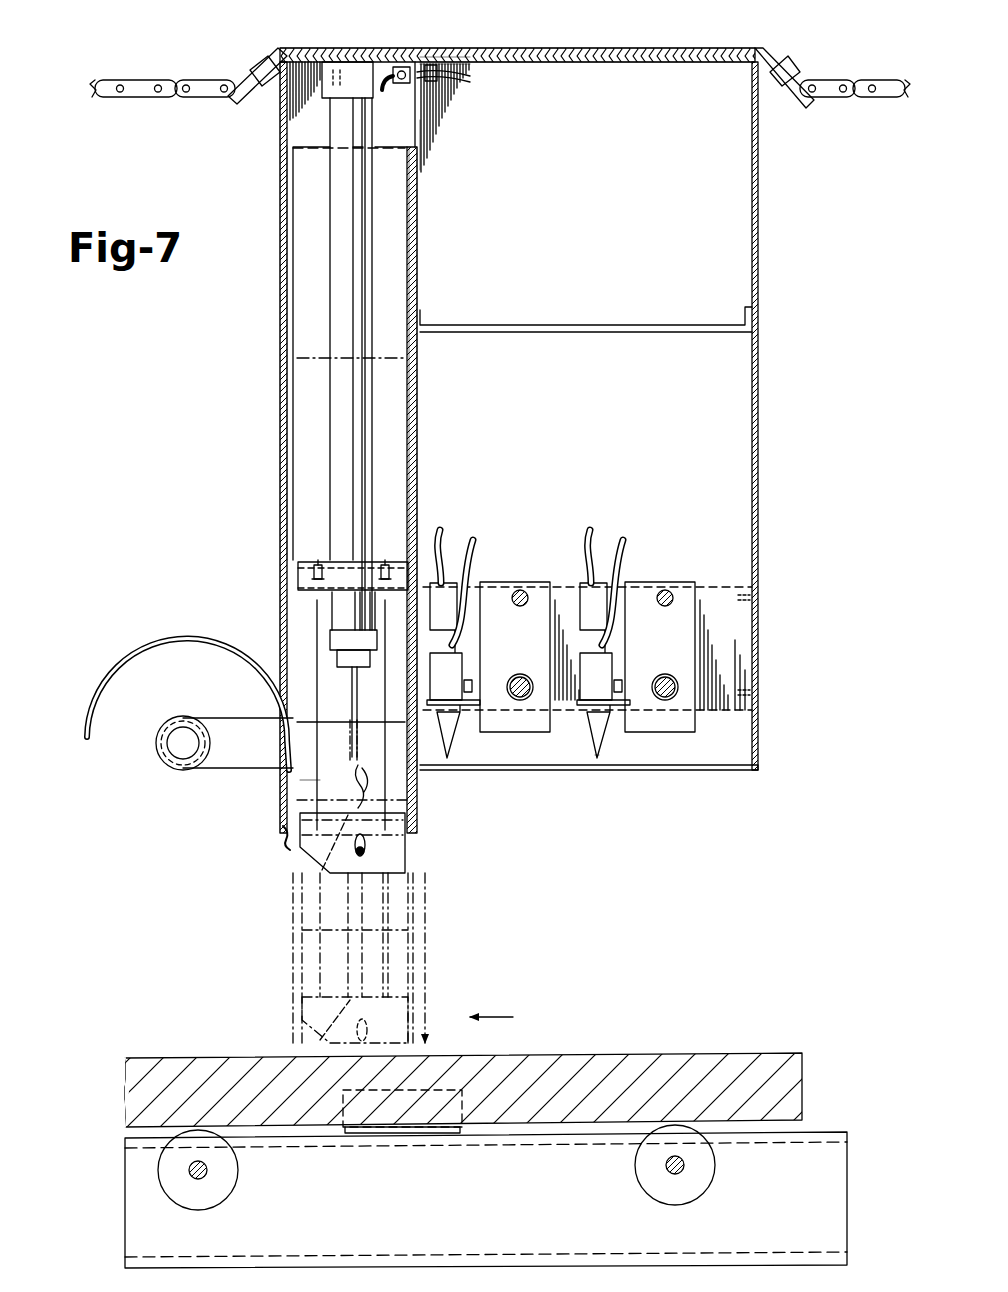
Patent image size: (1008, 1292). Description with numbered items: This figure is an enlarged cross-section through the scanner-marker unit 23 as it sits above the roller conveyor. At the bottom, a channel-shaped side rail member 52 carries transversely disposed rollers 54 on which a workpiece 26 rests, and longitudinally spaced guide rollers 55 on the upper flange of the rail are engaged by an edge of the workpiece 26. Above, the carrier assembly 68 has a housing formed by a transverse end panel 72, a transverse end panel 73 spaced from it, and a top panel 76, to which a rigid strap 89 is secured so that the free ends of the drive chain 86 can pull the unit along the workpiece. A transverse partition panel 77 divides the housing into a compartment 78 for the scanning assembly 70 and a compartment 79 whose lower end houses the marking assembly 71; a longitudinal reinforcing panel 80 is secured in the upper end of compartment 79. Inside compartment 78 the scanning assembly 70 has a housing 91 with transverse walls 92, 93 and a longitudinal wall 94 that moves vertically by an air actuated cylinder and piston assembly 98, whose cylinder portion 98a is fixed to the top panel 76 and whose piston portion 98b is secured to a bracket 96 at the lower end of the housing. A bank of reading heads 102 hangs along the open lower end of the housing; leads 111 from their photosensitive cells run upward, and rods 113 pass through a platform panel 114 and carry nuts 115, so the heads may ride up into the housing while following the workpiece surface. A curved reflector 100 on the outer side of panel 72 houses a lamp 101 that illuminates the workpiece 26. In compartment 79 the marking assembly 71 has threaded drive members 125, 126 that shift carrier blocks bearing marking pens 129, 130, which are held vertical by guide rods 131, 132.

The scanner-marker unit 23 is at (544, 46).
The rigid strap 89 is at (668, 47).
The top panel 76 is at (560, 64).
The drive chain 86 is at (165, 98).
The compartment 78 is at (300, 130).
The longitudinal wall 94 is at (395, 253).
The cylinder portion 98a is at (365, 300).
The compartment 79 is at (727, 272).
The housing 91 is at (282, 323).
The transverse end panel 72 is at (282, 371).
The longitudinal reinforcing panel 80 is at (555, 332).
The transverse wall 93 is at (418, 391).
The air actuated cylinder and piston assembly 98 is at (372, 418).
The transverse end panel 73 is at (760, 403).
The carrier assembly 68 is at (282, 459).
The transverse partition panel 77 is at (420, 453).
The transverse wall 92 is at (282, 514).
The nuts 115 is at (318, 578).
The platform panel 114 is at (300, 592).
The guide rod 131 is at (521, 589).
The guide rod 132 is at (667, 589).
The piston portion 98b is at (347, 678).
The marking pen 129 is at (457, 665).
The marking pen 130 is at (607, 665).
The curved reflector 100 is at (116, 668).
The lamp 101 is at (178, 768).
The threaded drive member 125 is at (518, 700).
The threaded drive member 126 is at (666, 700).
The leads 111 is at (348, 776).
The rods 113 is at (312, 794).
The bracket 96 is at (400, 794).
The marking assembly 71 is at (603, 764).
The scanning assembly 70 is at (292, 838).
The reading heads 102 is at (411, 852).
The workpiece 26 is at (622, 1055).
The guide rollers 55 is at (362, 1134).
The rollers 54 is at (228, 1180).
The channel-shaped member 52 is at (482, 1211).